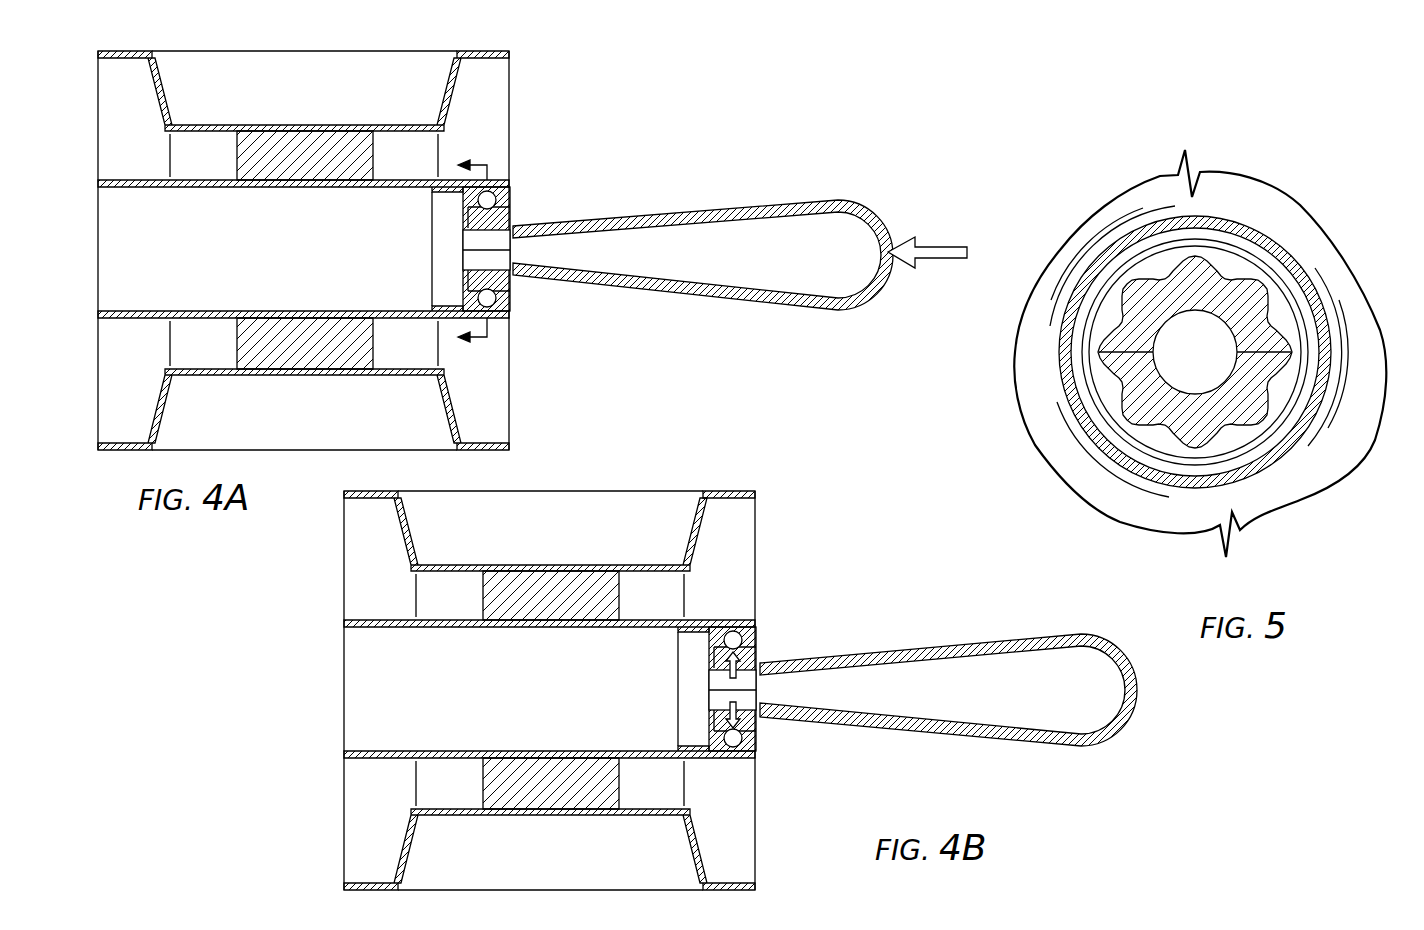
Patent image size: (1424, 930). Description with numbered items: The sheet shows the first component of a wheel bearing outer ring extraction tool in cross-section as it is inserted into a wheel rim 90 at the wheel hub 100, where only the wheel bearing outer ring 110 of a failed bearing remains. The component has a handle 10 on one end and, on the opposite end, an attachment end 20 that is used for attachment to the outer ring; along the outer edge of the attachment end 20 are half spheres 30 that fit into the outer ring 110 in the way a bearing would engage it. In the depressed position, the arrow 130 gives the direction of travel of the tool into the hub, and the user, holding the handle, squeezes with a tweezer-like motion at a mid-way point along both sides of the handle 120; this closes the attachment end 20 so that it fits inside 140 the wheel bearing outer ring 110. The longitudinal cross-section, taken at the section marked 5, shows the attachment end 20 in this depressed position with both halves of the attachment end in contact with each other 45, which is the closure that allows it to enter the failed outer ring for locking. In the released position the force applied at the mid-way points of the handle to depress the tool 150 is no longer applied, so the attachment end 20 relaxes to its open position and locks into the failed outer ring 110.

In FIG. 4A, the section line of FIG. 5 is at (463, 253).
In FIG. 4B, the handle 10 is at (948, 683).
In FIG. 4B, the attachment end 20 is at (702, 658).
In FIG. 5, the attachment end 20 is at (1189, 299).
In FIG. 5, the half spheres 30 is at (1210, 332).
In FIG. 5, the contact between attachment end halves 45 is at (1283, 331).
In FIG. 4B, the wheel rim 90 is at (768, 490).
In FIG. 4B, the wheel hub 100 is at (530, 656).
In FIG. 4A, the wheel bearing outer ring 110 is at (438, 301).
In FIG. 4A, the mid-way point along both sides of the handle 120 is at (572, 212).
In FIG. 4A, the arrow 130 is at (923, 278).
In FIG. 4A, the fit inside the outer ring 140 is at (464, 207).
In FIG. 4B, the force applied at mid-way points of the handle 150 is at (815, 652).